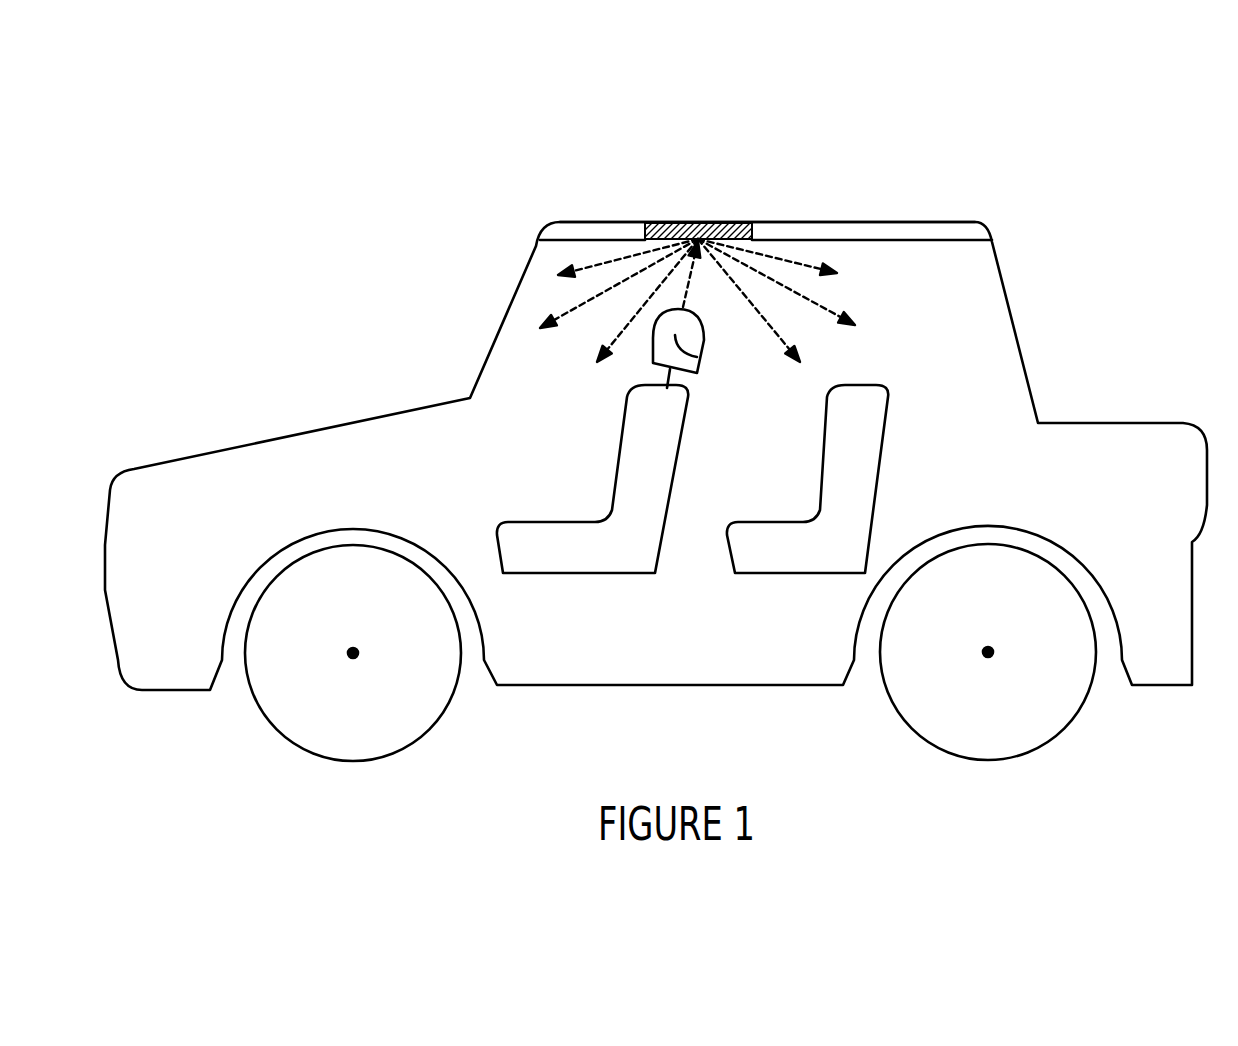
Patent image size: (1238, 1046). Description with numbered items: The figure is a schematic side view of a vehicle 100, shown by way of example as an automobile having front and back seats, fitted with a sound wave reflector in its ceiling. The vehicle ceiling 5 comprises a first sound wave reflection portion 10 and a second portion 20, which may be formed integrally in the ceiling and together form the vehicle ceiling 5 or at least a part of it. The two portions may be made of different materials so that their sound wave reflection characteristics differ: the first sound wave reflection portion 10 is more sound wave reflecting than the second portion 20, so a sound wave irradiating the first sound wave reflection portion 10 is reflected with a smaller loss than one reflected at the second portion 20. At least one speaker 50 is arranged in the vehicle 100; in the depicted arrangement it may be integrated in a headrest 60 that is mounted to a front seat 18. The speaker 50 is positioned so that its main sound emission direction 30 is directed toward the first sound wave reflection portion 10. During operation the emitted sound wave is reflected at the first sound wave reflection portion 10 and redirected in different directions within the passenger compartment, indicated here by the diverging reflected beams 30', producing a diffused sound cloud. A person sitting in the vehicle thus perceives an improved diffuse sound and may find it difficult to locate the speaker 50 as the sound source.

The vehicle 100 is at (1042, 145).
The vehicle ceiling 5 is at (818, 229).
The second portion 20 is at (594, 232).
The first sound wave reflection portion 10 is at (698, 222).
The main sound emission direction 30 is at (713, 297).
The emitted beams 30' is at (713, 313).
The speaker 50 is at (703, 359).
The headrest 60 is at (656, 362).
The front seat 18 is at (585, 576).